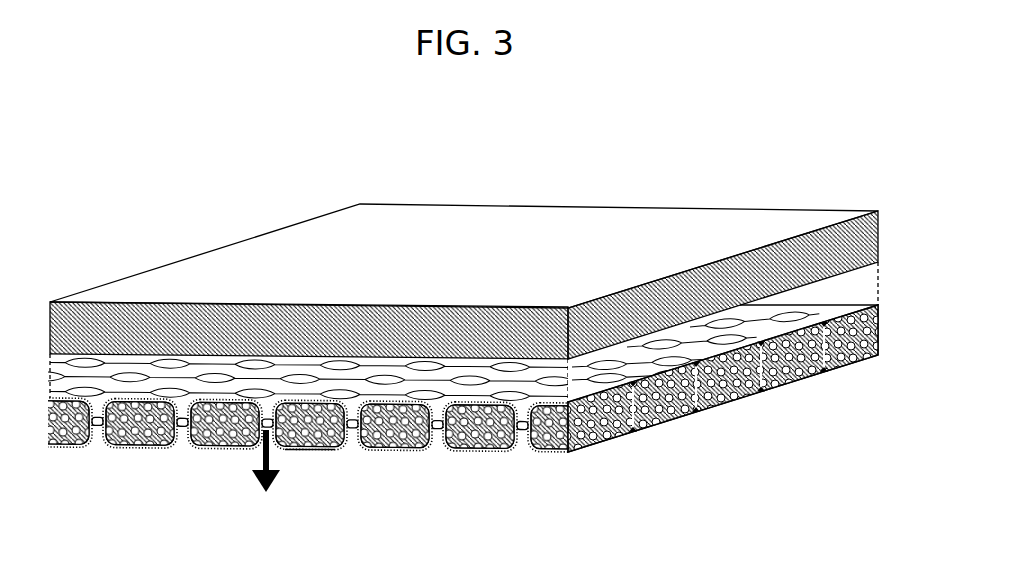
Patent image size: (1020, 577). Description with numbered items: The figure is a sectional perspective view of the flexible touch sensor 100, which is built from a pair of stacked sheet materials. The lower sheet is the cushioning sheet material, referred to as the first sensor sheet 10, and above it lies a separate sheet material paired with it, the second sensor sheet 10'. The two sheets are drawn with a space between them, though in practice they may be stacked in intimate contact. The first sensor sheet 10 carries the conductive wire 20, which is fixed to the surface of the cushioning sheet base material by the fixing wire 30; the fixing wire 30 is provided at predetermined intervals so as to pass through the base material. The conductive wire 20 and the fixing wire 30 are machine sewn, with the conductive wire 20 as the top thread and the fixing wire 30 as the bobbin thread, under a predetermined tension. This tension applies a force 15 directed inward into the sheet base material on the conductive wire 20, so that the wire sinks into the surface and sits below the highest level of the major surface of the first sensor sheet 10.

The flexible touch sensor 100 is at (249, 183).
The second sensor sheet 10' is at (464, 236).
The conductive wire 20 is at (313, 407).
The first sensor sheet 10 is at (448, 404).
The fixing wire 30 is at (316, 449).
The force 15 is at (263, 460).